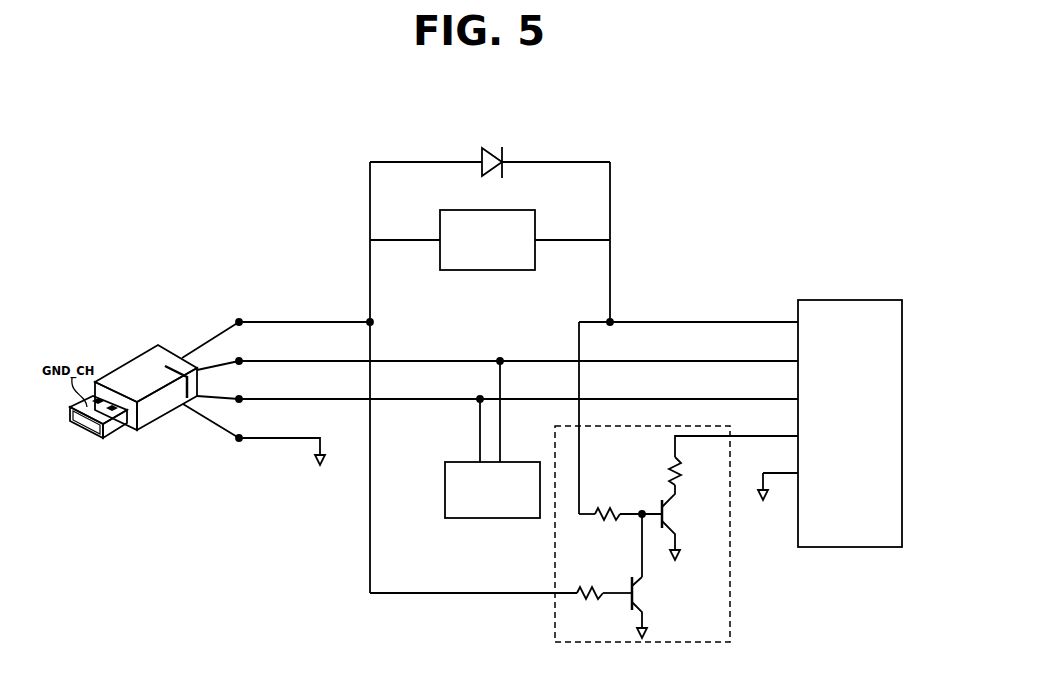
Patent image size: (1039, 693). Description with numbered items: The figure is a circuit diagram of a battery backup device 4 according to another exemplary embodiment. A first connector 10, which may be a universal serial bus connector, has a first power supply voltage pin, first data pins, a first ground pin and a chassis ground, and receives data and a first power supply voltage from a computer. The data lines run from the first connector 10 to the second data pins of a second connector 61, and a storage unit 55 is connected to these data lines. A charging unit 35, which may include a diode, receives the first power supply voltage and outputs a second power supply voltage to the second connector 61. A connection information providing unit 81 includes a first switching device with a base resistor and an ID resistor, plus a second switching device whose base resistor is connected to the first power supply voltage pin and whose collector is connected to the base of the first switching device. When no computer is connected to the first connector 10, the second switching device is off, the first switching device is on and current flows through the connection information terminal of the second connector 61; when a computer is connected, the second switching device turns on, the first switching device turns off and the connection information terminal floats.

The battery backup device 4 is at (690, 120).
The first connector 10 is at (123, 380).
The charging unit 35 is at (507, 210).
The storage unit 55 is at (518, 461).
The second connector 61 is at (876, 300).
The connection information providing unit 81 is at (730, 592).